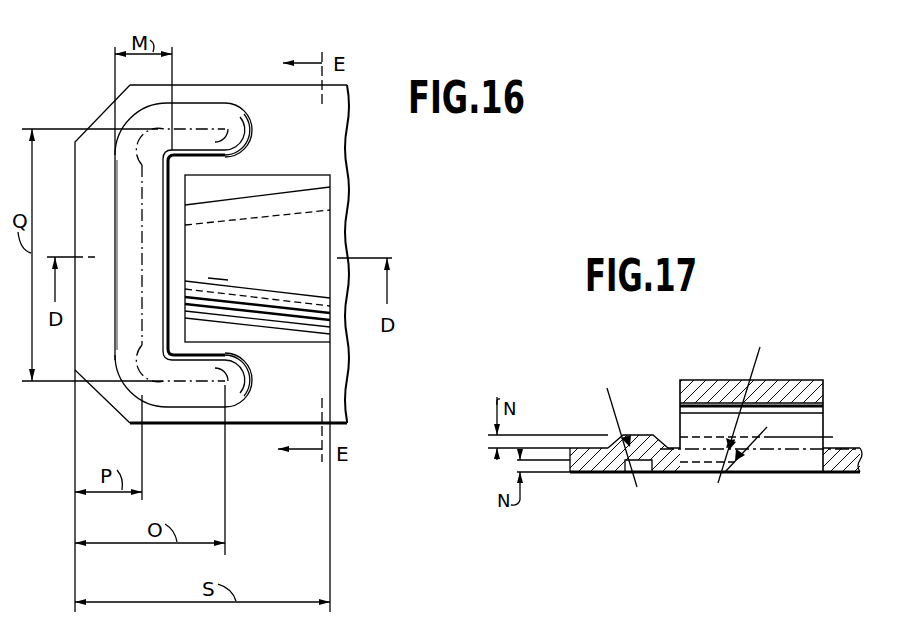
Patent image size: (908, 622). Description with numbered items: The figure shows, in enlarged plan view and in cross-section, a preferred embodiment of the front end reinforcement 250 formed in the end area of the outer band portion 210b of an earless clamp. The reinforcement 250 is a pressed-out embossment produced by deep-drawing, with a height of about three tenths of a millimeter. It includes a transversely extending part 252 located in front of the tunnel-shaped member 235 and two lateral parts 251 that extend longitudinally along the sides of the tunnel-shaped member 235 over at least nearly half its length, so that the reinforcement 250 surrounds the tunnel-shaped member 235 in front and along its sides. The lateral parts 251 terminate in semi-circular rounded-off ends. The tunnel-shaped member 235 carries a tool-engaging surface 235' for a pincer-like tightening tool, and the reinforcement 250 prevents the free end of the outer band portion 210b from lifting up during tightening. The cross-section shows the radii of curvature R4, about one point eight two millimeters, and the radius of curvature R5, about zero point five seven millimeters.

In FIG. 16, the front end reinforcement 250 is at (208, 100).
In FIG. 17, the front end reinforcement 250 is at (652, 428).
In FIG. 16, the lateral parts of the reinforcement 251 is at (230, 155).
In FIG. 16, the transversely extending part of the reinforcement 252 is at (133, 208).
In FIG. 16, the tunnel-shaped member 235 is at (257, 320).
In FIG. 17, the tunnel-shaped member 235 is at (751, 362).
In FIG. 16, the tool-engaging surface 235' is at (300, 258).
In FIG. 16, the outer band portion 210b is at (334, 390).
In FIG. 17, the radii of curvature R4 is at (647, 422).
In FIG. 17, the radius of curvature R5 is at (816, 425).